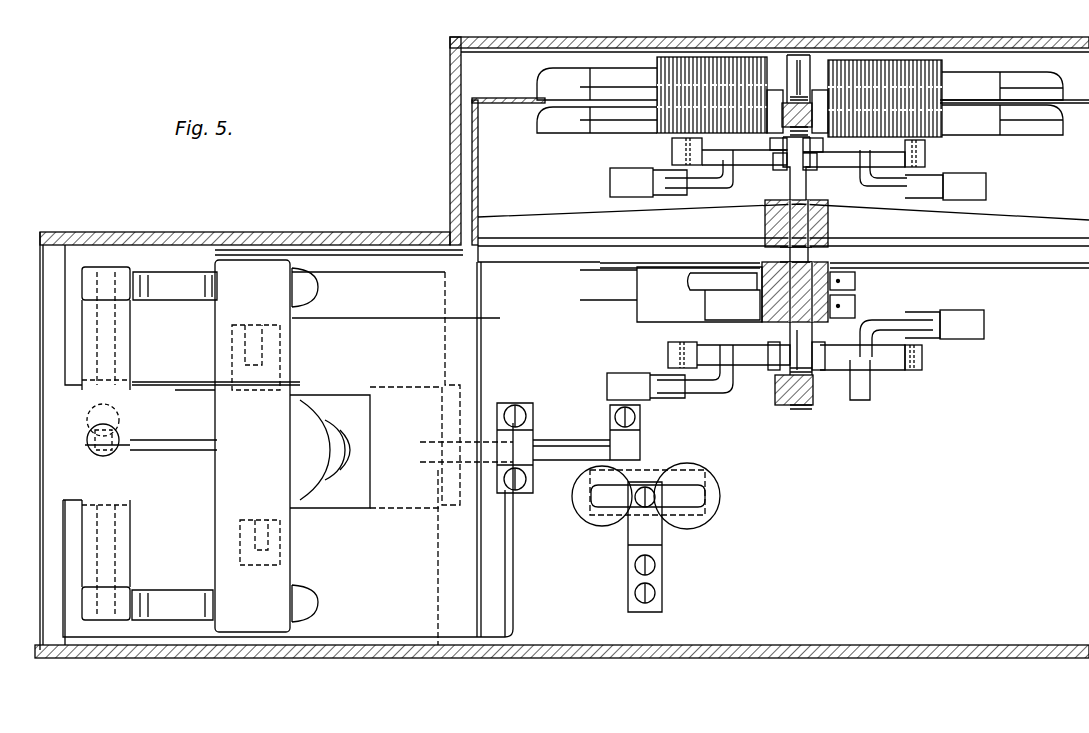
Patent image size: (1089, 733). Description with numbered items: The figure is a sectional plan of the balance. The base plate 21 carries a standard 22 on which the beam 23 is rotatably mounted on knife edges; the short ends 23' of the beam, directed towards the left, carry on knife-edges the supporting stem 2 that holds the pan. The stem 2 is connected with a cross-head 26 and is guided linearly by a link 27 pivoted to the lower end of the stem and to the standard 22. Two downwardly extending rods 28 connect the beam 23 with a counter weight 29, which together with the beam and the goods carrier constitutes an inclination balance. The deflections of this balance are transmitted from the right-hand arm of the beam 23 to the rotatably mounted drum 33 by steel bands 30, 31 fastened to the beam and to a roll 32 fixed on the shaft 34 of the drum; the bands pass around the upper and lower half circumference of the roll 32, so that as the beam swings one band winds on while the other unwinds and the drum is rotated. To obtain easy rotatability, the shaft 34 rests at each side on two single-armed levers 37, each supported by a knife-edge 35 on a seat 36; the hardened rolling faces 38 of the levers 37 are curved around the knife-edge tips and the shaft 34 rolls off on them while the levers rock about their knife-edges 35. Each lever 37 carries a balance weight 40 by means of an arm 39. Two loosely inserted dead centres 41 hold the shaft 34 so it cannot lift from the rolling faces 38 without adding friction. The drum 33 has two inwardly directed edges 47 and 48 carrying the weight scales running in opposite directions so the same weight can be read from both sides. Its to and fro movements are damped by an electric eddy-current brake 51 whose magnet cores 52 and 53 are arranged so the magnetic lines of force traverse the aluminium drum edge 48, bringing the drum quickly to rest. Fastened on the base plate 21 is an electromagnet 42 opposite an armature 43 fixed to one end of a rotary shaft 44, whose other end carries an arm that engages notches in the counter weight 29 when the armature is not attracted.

The supporting stem 2 is at (90, 440).
The base plate 21 is at (608, 650).
The standard 22 is at (190, 385).
The beam 23 is at (364, 441).
The short ends of the beam 23' is at (174, 446).
The cross-head 26 is at (86, 330).
The link 27 is at (172, 450).
The rods 28 is at (305, 268).
The counter weight 29 is at (388, 645).
The steel band 30 is at (847, 281).
The steel band 31 is at (847, 306).
The roll 32 is at (775, 310).
The drum 33 is at (470, 176).
The shaft 34 is at (800, 188).
The knife-edge 35 is at (686, 158).
The seat 36 is at (672, 144).
The single-armed lever 37 is at (745, 165).
The rolling face 38 is at (780, 170).
The arm 39 is at (710, 190).
The balance weight 40 is at (610, 182).
The dead centre 41 is at (790, 100).
The electromagnet 42 is at (720, 498).
The armature 43 is at (705, 470).
The rotary shaft 44 is at (560, 447).
The inwardly directed edge 47 is at (498, 240).
The inwardly directed edge 48 is at (490, 99).
The eddy-current brake 51 is at (682, 57).
The magnet core 52 is at (552, 68).
The magnet core 53 is at (548, 126).